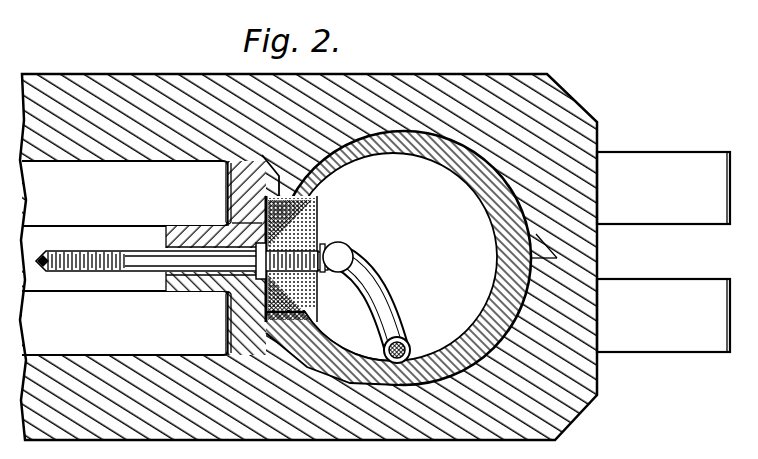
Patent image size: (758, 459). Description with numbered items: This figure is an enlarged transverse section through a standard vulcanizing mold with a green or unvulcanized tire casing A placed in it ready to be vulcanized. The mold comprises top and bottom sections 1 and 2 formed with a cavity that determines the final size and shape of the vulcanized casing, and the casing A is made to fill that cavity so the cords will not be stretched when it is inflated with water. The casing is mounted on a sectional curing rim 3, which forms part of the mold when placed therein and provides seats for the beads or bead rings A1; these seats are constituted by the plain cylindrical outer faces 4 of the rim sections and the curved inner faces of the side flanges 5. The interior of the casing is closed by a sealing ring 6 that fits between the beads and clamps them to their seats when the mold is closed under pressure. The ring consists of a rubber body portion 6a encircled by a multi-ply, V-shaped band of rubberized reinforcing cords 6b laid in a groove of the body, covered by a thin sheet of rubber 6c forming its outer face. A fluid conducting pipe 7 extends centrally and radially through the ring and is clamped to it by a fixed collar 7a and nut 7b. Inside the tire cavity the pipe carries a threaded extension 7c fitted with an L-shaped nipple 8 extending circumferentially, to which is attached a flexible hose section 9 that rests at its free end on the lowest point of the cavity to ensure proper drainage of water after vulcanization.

The top mold section 1 is at (656, 149).
The bottom mold section 2 is at (654, 360).
The sectional curing rim 3 is at (207, 226).
The cylindrical outer faces 4 is at (226, 193).
The side flanges 5 is at (226, 165).
The sealing ring 6 is at (333, 196).
The rubber body portion 6a is at (264, 283).
The rubberized reinforcing cords 6b is at (312, 284).
The thin sheet of rubber 6c is at (318, 303).
The fluid conducting pipe 7 is at (140, 272).
The fixed collar 7a is at (334, 245).
The nut 7b is at (234, 223).
The threaded extension 7c is at (350, 252).
The L-shaped nipple 8 is at (364, 256).
The flexible hose section 9 is at (388, 292).
The tire casing A is at (494, 220).
The bead rings A1 is at (326, 338).